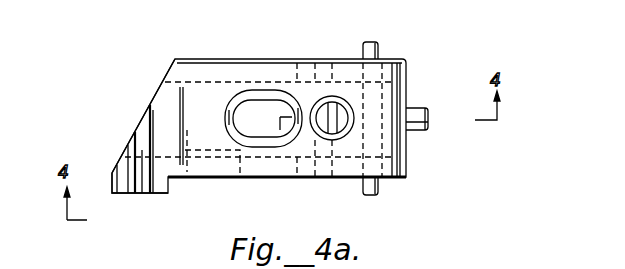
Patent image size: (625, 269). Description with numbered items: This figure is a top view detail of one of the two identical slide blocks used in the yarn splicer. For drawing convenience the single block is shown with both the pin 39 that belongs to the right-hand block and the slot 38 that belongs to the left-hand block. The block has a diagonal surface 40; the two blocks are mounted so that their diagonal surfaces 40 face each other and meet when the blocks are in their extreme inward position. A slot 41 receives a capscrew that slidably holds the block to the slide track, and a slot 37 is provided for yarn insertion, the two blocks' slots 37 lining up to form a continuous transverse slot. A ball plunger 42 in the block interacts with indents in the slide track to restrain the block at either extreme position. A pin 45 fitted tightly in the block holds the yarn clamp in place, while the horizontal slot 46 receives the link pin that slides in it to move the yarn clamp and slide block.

The slot 37 is at (137, 132).
The slot 38 is at (315, 63).
The pin 39 is at (417, 130).
The diagonal surface 40 is at (160, 94).
The slot 41 is at (260, 100).
The ball plunger 42 is at (353, 112).
The pin 45 is at (380, 55).
The horizontal slot 46 is at (225, 181).